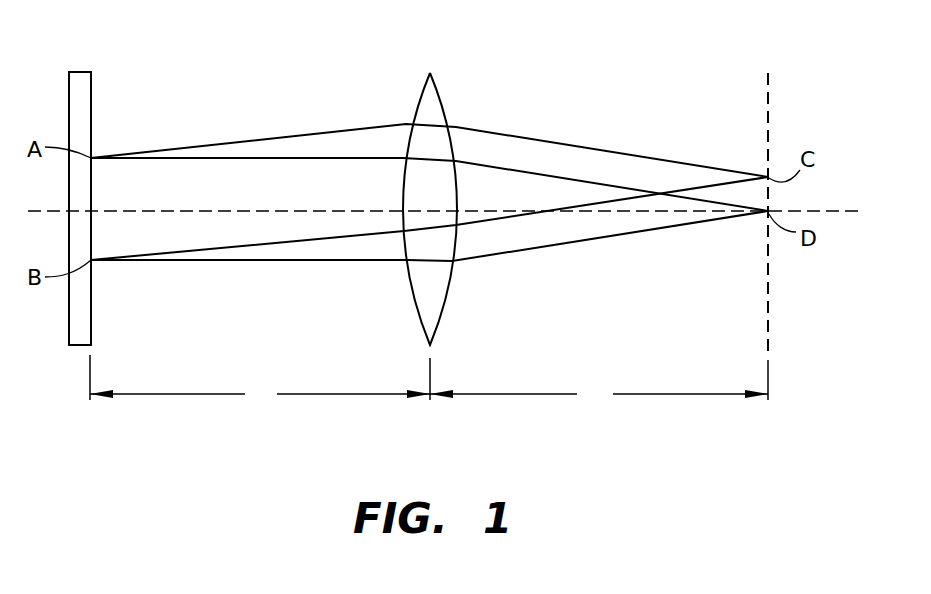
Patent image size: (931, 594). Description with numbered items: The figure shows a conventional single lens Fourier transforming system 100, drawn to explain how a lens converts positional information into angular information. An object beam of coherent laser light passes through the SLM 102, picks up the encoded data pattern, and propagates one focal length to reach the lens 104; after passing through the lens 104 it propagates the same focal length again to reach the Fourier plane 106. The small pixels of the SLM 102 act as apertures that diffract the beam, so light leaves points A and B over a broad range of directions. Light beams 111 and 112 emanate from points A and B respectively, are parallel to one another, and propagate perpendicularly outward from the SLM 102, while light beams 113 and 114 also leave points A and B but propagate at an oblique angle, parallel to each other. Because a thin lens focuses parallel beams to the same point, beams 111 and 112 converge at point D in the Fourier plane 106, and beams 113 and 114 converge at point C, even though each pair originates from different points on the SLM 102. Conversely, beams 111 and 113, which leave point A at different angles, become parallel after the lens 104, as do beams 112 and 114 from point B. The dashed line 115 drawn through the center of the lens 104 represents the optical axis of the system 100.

The single lens Fourier transforming system 100 is at (150, 443).
The SLM 102 is at (91, 89).
The lens 104 is at (441, 98).
The Fourier plane 106 is at (769, 117).
The light beam 111 is at (256, 160).
The light beam 112 is at (297, 262).
The light beam 113 is at (328, 131).
The light beam 114 is at (210, 245).
The optical axis 115 is at (831, 211).